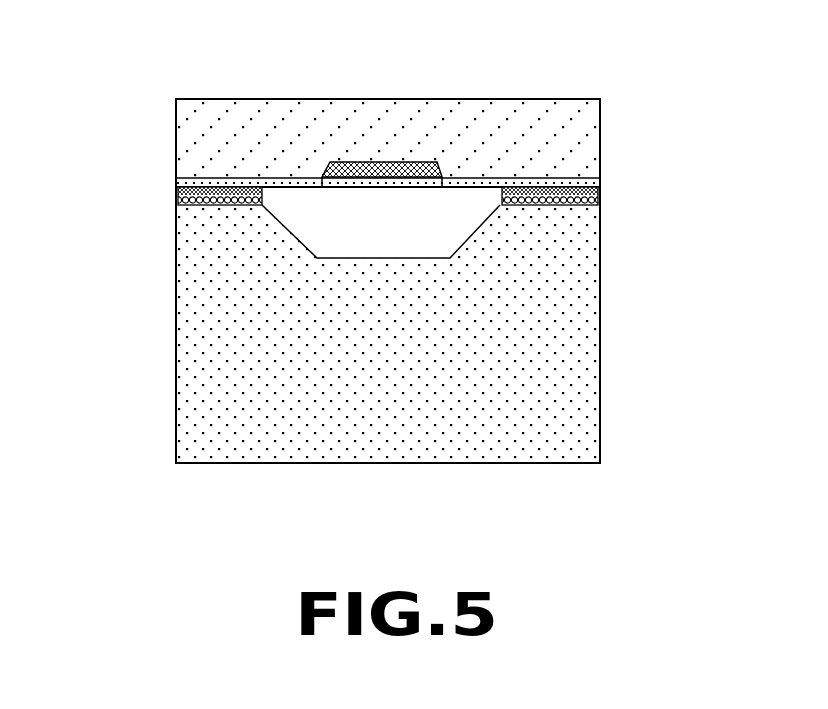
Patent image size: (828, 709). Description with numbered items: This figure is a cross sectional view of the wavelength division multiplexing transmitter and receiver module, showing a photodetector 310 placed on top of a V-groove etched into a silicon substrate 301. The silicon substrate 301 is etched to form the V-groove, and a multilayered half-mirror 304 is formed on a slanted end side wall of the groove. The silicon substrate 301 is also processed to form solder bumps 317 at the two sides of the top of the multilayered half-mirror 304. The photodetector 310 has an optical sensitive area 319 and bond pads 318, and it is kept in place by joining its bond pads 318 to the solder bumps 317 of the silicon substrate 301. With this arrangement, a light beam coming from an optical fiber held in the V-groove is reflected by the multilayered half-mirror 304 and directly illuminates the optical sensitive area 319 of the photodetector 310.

The silicon substrate 301 is at (518, 360).
The multilayered half-mirror 304 is at (335, 217).
The photodetector 310 is at (373, 130).
The solder bumps 317 is at (177, 200).
The bond pads 318 is at (600, 192).
The optical sensitive area 319 is at (397, 162).